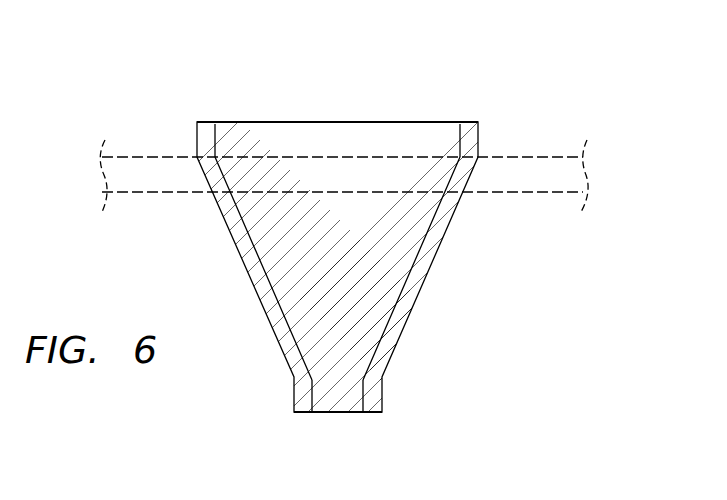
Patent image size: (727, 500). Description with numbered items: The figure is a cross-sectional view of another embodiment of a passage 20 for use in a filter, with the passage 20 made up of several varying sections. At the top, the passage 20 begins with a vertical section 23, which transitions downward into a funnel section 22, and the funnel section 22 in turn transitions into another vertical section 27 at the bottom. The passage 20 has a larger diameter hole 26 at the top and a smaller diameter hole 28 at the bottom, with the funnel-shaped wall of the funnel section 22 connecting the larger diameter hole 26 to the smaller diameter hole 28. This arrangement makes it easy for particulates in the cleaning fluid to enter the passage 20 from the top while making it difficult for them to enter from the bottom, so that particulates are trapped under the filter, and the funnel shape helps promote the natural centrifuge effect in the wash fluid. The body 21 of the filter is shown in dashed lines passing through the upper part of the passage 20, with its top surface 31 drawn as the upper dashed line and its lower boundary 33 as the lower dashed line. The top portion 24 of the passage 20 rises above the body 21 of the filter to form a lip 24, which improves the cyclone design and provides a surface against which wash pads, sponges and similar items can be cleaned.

The passage 20 is at (466, 72).
The body of the filter 21 is at (390, 184).
The funnel section 22 is at (430, 268).
The vertical section 23 is at (482, 130).
The lip 24 is at (197, 131).
The larger diameter hole 26 is at (343, 128).
The vertical section 27 is at (338, 385).
The smaller diameter hole 28 is at (338, 413).
The top surface 31 is at (540, 157).
The lower wall of conduit 33 is at (533, 193).